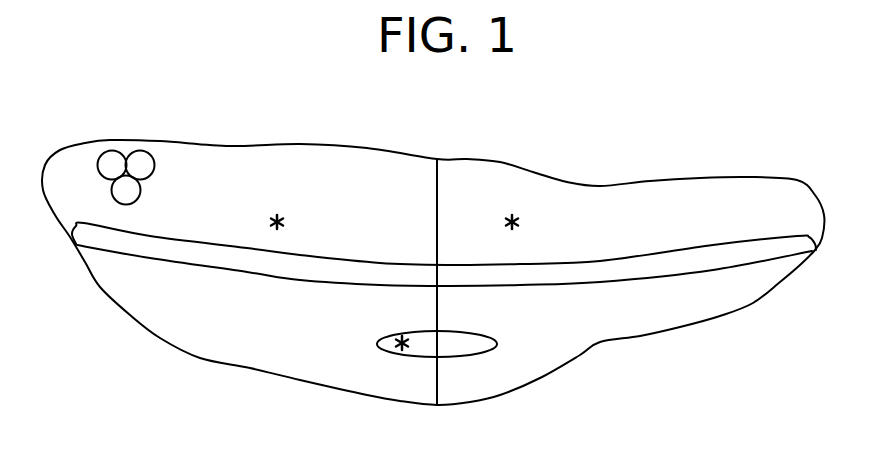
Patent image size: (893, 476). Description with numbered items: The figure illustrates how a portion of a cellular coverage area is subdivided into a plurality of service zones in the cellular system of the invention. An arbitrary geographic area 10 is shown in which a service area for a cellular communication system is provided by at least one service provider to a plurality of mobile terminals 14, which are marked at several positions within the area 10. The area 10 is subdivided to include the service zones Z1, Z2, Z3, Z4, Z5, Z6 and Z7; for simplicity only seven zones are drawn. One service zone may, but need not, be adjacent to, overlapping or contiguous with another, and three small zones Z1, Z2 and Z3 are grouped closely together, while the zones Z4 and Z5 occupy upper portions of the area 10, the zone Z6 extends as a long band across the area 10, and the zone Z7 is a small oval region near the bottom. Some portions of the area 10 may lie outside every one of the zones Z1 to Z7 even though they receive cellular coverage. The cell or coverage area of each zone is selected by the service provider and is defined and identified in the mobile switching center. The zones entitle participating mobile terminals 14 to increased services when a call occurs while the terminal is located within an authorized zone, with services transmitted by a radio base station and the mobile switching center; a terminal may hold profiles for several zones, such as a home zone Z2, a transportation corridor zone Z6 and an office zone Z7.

The geographic area 10 is at (657, 349).
The mobile terminal 14 is at (280, 212).
The service zone Z1 is at (113, 160).
The service zone Z2 is at (145, 163).
The service zone Z3 is at (130, 195).
The service zone Z4 is at (383, 170).
The service zone Z5 is at (605, 198).
The service zone Z6 is at (623, 270).
The service zone Z7 is at (487, 340).